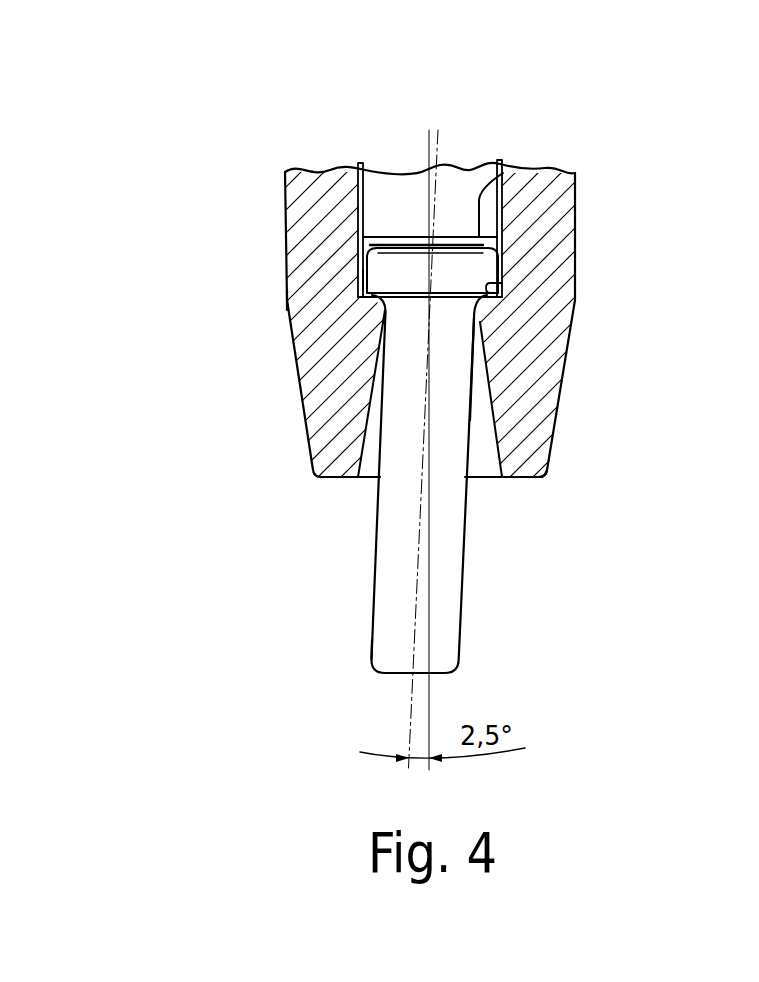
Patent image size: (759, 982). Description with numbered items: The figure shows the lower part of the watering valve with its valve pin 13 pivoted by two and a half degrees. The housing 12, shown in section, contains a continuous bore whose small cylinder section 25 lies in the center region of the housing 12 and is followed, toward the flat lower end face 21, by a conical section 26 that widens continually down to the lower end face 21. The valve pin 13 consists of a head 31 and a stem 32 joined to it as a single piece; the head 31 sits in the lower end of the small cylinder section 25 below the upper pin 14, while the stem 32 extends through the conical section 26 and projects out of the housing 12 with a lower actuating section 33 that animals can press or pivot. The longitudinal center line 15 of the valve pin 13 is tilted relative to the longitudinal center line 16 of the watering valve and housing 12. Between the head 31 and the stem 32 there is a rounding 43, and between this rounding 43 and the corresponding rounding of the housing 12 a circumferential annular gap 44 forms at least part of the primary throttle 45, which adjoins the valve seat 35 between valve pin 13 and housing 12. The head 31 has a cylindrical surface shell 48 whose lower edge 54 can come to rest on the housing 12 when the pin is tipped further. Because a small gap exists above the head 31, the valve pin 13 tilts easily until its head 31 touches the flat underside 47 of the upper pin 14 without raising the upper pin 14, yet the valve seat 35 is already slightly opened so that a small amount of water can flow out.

The housing 12 is at (557, 218).
The valve pin 13 is at (400, 482).
The upper pin 14 is at (468, 187).
The longitudinal center line of the valve pin 15 is at (428, 570).
The longitudinal center line of the watering valve 16 is at (428, 570).
The lower end face 21 is at (527, 477).
The small cylinder section 25 is at (503, 250).
The conical section 26 is at (483, 448).
The head 31 is at (470, 277).
The stem 32 is at (448, 433).
The lower actuating section 33 is at (443, 620).
The valve seat 35 is at (322, 299).
The rounding 43 is at (384, 297).
The annular gap 44 is at (390, 303).
The primary throttle 45 is at (238, 290).
The flat underside 47 is at (503, 173).
The cylindrical surface shell 48 is at (360, 277).
The edge 54 is at (490, 288).